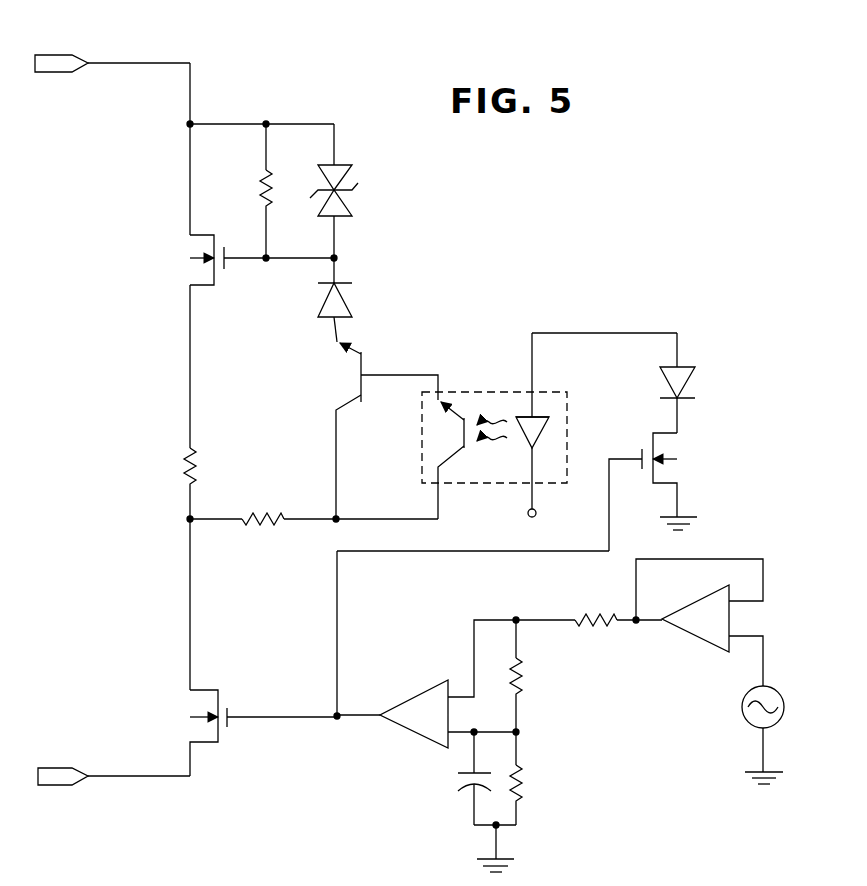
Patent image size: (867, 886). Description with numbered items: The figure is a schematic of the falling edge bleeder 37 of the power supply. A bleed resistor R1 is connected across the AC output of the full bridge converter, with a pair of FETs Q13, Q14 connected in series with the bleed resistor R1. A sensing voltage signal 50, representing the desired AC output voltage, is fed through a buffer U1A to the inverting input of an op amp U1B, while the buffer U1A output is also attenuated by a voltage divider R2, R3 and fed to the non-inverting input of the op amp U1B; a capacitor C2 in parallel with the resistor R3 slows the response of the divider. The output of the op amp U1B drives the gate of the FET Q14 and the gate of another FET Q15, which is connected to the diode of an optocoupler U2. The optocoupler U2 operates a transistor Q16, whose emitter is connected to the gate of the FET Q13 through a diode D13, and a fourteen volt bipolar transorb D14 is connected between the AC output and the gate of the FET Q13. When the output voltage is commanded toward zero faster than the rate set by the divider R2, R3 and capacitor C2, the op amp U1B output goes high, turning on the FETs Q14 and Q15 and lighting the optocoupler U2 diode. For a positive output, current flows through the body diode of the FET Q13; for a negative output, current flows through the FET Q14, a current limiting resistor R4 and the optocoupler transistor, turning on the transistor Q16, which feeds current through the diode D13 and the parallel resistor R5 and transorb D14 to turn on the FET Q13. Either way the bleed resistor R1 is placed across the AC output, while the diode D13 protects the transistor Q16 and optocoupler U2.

The falling edge bleeder 37 is at (473, 300).
The sensing voltage signal 50 is at (746, 727).
The FET Q13 is at (238, 260).
The FET Q14 is at (238, 733).
The FET Q15 is at (667, 442).
The transistor Q16 is at (385, 431).
The bleed resistor R1 is at (175, 487).
The voltage divider resistor R2 is at (534, 676).
The voltage divider resistor R3 is at (534, 778).
The current limiting resistor R4 is at (263, 504).
The resistor R5 is at (248, 191).
The diode D13 is at (359, 300).
The bipolar transorb D14 is at (359, 191).
The capacitor C2 is at (457, 778).
The optocoupler U2 is at (511, 440).
The buffer U1A is at (699, 622).
The op amp U1B is at (428, 682).